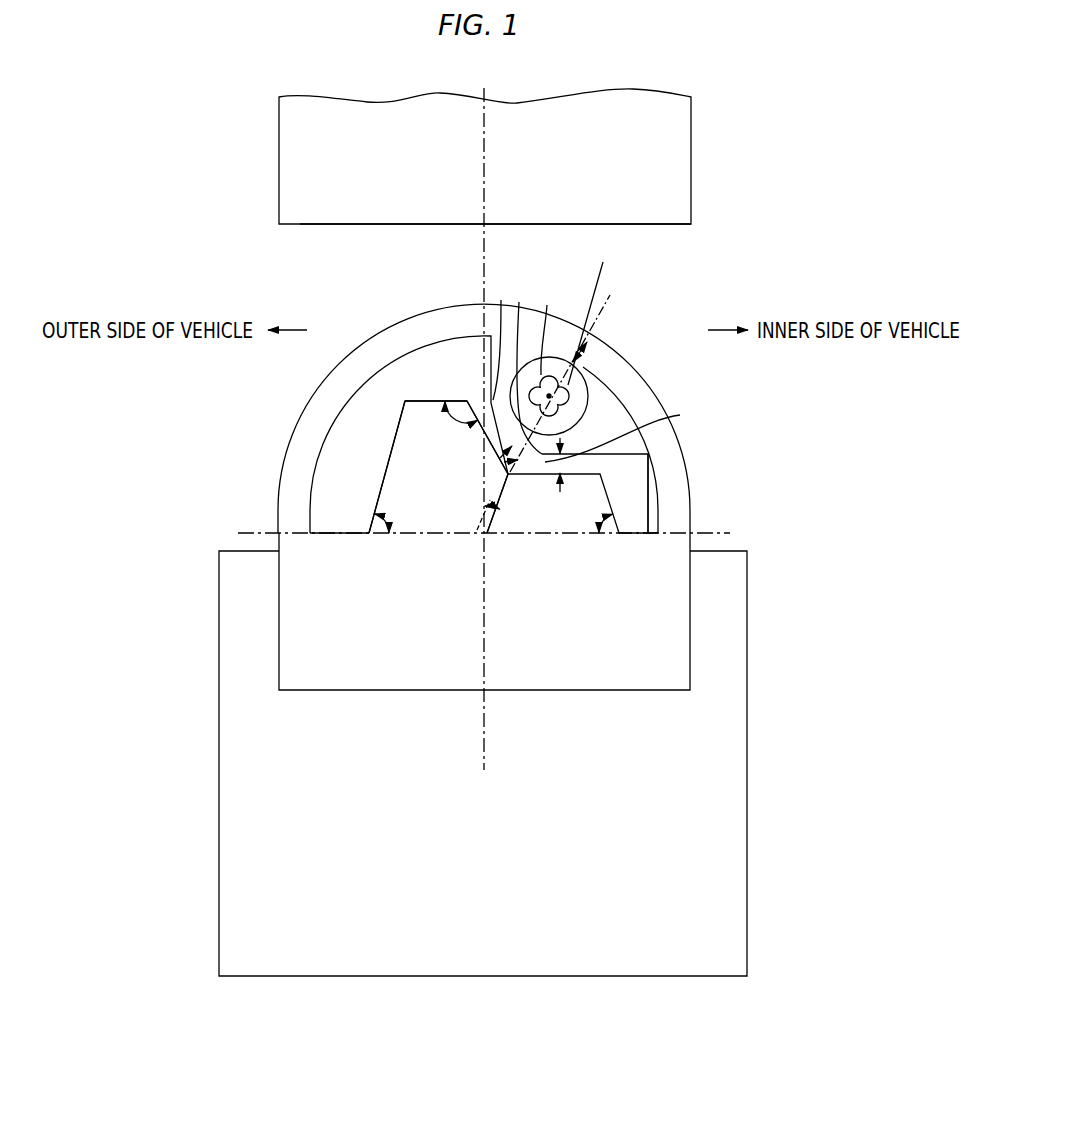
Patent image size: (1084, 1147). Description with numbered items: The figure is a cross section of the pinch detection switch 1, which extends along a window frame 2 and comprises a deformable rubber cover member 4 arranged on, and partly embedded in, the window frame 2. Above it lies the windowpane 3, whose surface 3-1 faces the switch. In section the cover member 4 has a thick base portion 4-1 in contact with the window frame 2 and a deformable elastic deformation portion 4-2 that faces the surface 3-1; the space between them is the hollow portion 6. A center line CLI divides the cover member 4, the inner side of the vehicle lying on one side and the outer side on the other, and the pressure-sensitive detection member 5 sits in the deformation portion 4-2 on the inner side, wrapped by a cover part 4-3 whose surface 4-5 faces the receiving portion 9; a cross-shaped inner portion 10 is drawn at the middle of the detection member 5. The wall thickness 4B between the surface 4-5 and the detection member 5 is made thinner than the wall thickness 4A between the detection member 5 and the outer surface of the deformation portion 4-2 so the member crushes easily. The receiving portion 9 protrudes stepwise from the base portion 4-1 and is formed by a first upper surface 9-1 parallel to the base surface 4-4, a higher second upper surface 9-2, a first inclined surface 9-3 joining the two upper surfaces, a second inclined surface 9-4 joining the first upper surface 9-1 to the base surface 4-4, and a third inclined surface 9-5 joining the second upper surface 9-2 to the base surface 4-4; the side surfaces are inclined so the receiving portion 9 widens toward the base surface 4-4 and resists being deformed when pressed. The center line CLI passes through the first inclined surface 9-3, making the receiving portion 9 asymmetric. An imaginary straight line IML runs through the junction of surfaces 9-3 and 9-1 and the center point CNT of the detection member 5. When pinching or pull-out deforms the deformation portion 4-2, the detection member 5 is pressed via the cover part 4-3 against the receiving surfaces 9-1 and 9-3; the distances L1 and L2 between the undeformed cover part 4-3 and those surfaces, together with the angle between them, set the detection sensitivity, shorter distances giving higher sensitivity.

The pinch detection switch 1 is at (742, 411).
The window frame 2 is at (740, 590).
The windowpane 3 is at (680, 172).
The surface of windowpane 3-1 is at (673, 225).
The cover member 4 is at (691, 516).
The base portion 4-1 is at (683, 637).
The deformation portion 4-2 is at (643, 398).
The cover part 4-3 is at (550, 331).
The base surface 4-4 is at (722, 532).
The surface of cover part 4-5 is at (505, 423).
The wall thickness 4A is at (590, 347).
The wall thickness 4B is at (553, 485).
The pressure-sensitive detection member 5 is at (583, 379).
The hollow portion 6 is at (345, 427).
The receiving portion 9 is at (390, 475).
The first upper surface 9-1 is at (594, 468).
The second upper surface 9-2 is at (422, 396).
The first inclined surface 9-3 is at (473, 402).
The second inclined surface 9-4 is at (618, 494).
The third inclined surface 9-5 is at (388, 430).
The clover shaped hole 10 is at (550, 378).
The distance L1 is at (628, 430).
The distance L2 is at (511, 443).
The center line CLI is at (483, 247).
The center point CNT is at (600, 312).
The imaginary straight line IML is at (612, 298).